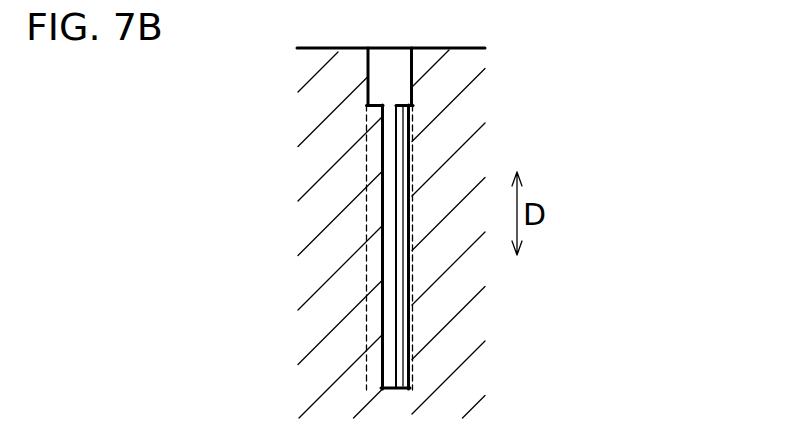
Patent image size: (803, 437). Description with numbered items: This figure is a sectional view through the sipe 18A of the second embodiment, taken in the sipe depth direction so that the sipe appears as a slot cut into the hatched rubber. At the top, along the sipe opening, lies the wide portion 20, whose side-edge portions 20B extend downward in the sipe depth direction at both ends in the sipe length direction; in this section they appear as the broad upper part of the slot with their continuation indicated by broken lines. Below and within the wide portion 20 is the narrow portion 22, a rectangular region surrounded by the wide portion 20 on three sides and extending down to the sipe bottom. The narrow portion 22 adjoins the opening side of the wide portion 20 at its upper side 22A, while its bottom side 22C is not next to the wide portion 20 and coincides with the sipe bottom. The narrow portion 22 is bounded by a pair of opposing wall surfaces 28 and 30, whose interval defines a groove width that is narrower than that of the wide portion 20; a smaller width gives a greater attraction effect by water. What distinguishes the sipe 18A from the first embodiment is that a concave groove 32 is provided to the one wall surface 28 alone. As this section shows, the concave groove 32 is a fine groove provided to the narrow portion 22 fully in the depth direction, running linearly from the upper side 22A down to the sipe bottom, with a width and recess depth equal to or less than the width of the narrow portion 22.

The wide portion 20 is at (393, 72).
The side-edge portion 20B is at (366, 211).
The sipe 18A is at (413, 105).
The narrow portion 22 is at (390, 177).
The upper side 22A is at (382, 107).
The bottom side 22C is at (381, 388).
The wall surface 28 is at (396, 295).
The wall surface 30 is at (382, 271).
The concave groove 32 is at (394, 342).